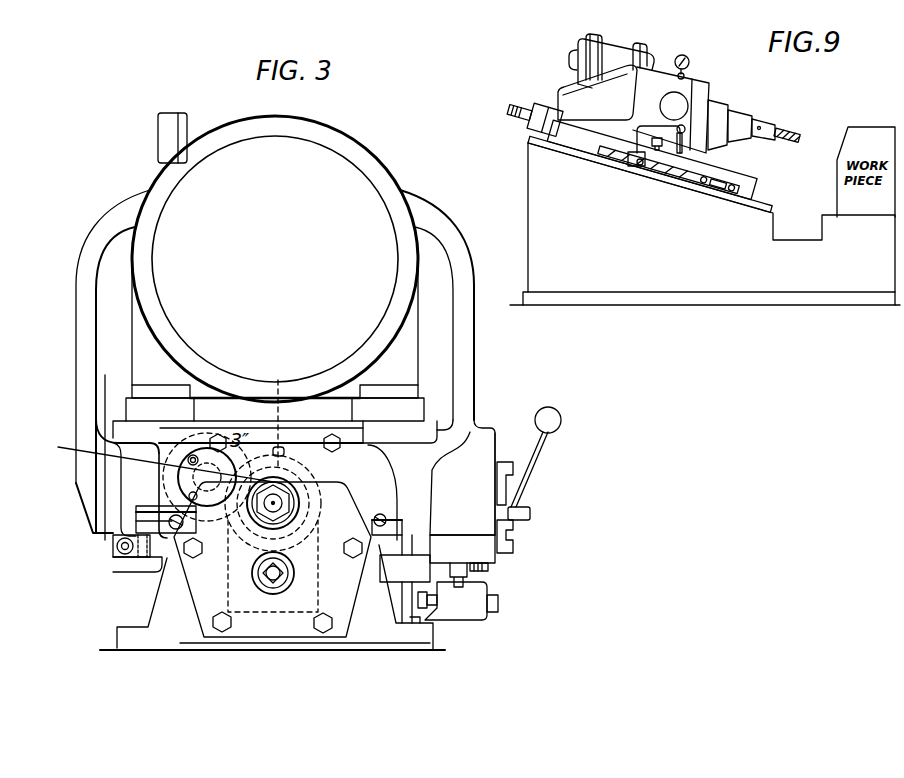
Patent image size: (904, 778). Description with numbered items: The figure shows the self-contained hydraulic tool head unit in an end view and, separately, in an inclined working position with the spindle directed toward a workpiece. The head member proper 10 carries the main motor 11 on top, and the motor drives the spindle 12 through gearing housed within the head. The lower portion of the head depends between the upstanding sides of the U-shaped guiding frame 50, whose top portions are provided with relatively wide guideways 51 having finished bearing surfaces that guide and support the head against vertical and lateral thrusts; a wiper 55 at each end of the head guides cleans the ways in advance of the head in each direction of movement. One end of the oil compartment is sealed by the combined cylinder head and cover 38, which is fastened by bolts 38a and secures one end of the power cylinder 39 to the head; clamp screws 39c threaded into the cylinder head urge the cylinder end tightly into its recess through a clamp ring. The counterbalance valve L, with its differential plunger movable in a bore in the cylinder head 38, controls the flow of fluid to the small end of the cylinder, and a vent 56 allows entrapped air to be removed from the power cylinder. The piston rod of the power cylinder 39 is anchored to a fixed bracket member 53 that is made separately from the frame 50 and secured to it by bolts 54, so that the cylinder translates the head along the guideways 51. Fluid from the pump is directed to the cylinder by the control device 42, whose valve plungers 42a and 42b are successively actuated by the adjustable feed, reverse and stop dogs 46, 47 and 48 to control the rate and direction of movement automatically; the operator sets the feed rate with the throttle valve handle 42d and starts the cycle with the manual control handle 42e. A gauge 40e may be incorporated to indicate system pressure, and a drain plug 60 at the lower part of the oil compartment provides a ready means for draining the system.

In FIG. 3, the head member proper 10 is at (98, 230).
In FIG. 9, the head member proper 10 is at (661, 81).
In FIG. 3, the main motor 11 is at (275, 259).
In FIG. 9, the main motor 11 is at (616, 55).
In FIG. 9, the spindle 12 is at (765, 128).
In FIG. 3, the combined cylinder head and cover 38 is at (384, 456).
In FIG. 9, the combined cylinder head and cover 38 is at (597, 92).
In FIG. 3, the bolts 38a is at (302, 459).
In FIG. 3, the power cylinder 39 is at (312, 474).
In FIG. 3, the clamp screws 39c is at (267, 413).
In FIG. 3, the gauge 40e is at (158, 134).
In FIG. 3, the control device 42 is at (471, 497).
In FIG. 9, the control device 42 is at (640, 140).
In FIG. 3, the valve plunger 42a is at (490, 566).
In FIG. 3, the valve plunger 42b is at (448, 563).
In FIG. 3, the throttle valve handle 42d is at (532, 512).
In FIG. 3, the manual control handle 42e is at (535, 472).
In FIG. 9, the feed dog 46 is at (693, 179).
In FIG. 9, the reverse dog 47 is at (731, 189).
In FIG. 3, the stop dog 48 is at (478, 620).
In FIG. 9, the stop dog 48 is at (637, 166).
In FIG. 3, the guiding frame 50 is at (272, 592).
In FIG. 9, the guiding frame 50 is at (592, 153).
In FIG. 3, the guideways 51 is at (163, 551).
In FIG. 9, the guideways 51 is at (749, 181).
In FIG. 3, the fixed bracket member 53 is at (265, 637).
In FIG. 9, the fixed bracket member 53 is at (523, 110).
In FIG. 3, the bolts 54 is at (330, 636).
In FIG. 3, the wiper 55 is at (158, 513).
In FIG. 3, the vent 56 is at (284, 453).
In FIG. 3, the drain plug 60 is at (267, 582).
In FIG. 3, the counterbalance valve L is at (157, 463).